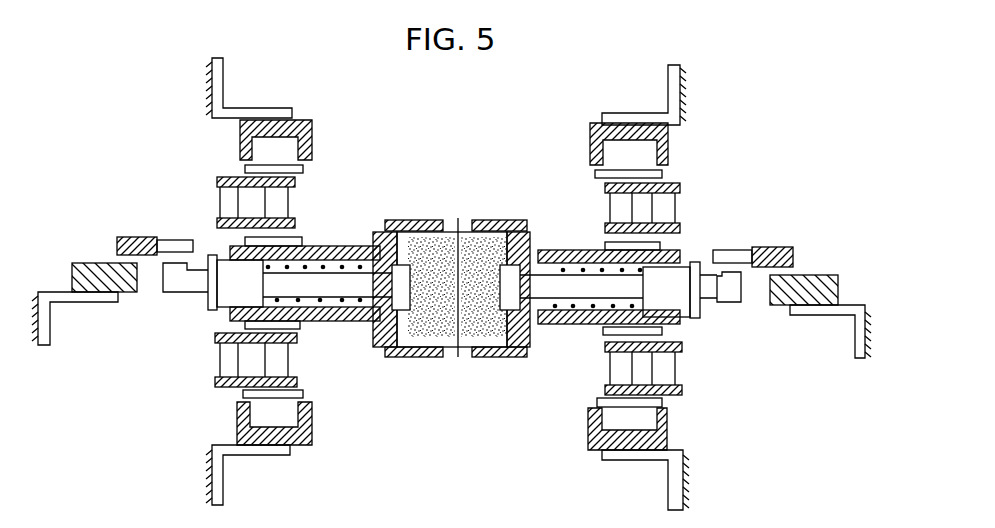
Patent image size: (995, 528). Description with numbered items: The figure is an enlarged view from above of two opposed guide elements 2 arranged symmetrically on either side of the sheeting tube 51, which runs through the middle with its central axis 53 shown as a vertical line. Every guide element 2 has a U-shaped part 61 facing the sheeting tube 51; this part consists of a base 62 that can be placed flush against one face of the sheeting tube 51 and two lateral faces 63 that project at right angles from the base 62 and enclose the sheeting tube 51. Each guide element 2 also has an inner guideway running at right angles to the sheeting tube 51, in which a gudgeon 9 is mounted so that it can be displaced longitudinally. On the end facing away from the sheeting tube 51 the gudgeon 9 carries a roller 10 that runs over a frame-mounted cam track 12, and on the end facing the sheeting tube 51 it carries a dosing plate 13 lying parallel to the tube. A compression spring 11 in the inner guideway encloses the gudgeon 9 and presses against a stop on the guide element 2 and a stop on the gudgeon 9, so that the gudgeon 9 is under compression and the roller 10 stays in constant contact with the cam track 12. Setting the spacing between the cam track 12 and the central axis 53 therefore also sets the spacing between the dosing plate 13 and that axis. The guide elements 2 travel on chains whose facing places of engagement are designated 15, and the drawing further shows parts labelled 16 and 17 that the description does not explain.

The guide element 2 is at (423, 357).
The gudgeon 9 is at (578, 250).
The roller 10 is at (193, 246).
The compression spring 11 is at (344, 246).
The cam track 12 is at (143, 237).
The dosing plate 13 is at (385, 340).
The places of engagement of the chains 15 is at (300, 120).
The lower bearing 16 is at (216, 358).
The upper right motor 17 is at (625, 113).
The sheeting tube 51 is at (447, 340).
The central axis 53 is at (458, 357).
The U-shaped part 61 is at (417, 182).
The base 62 is at (497, 219).
The lateral faces 63 is at (400, 218).